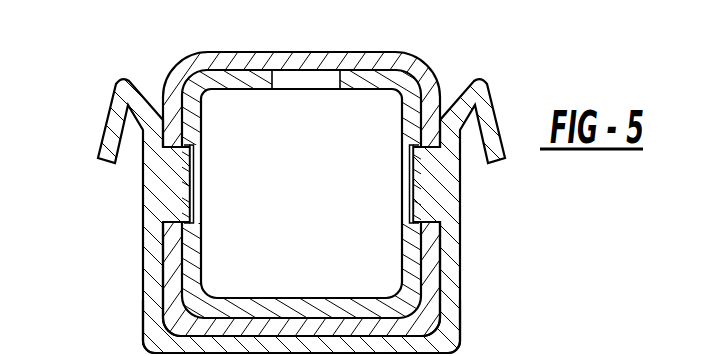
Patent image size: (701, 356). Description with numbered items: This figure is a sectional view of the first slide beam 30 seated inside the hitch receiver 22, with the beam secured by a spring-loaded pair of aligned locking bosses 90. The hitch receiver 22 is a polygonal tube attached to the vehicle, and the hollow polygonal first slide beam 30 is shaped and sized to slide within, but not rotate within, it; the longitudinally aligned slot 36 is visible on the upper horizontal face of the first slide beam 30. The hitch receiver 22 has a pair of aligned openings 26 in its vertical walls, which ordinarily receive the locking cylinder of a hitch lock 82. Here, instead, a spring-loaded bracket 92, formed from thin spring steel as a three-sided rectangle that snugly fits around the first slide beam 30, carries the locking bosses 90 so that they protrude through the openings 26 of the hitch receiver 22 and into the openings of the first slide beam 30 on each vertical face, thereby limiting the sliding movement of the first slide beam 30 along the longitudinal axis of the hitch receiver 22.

The hitch receiver 22 is at (412, 53).
The pair of aligned openings 26 is at (168, 225).
The first slide beam 30 is at (202, 258).
The longitudinally aligned slot 36 is at (307, 90).
The hitch lock 82 is at (69, 115).
The spring-loaded pair of aligned locking bosses 90 is at (187, 182).
The spring-loaded bracket 92 is at (143, 304).